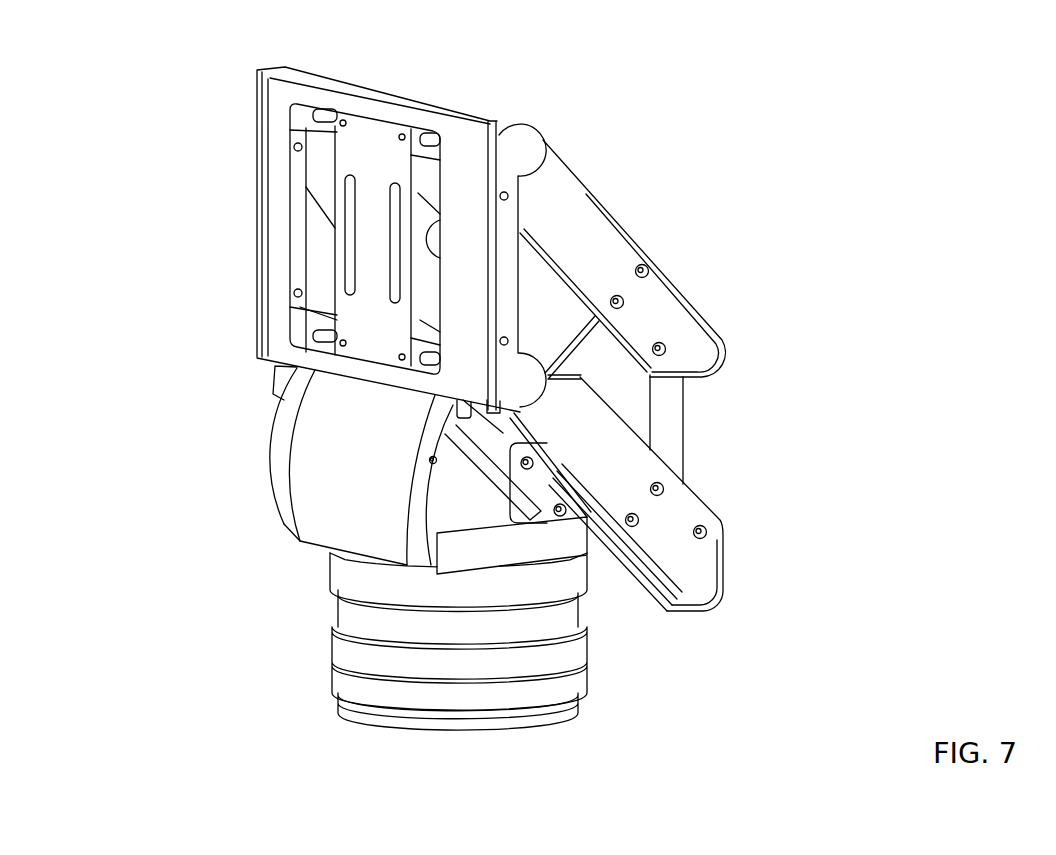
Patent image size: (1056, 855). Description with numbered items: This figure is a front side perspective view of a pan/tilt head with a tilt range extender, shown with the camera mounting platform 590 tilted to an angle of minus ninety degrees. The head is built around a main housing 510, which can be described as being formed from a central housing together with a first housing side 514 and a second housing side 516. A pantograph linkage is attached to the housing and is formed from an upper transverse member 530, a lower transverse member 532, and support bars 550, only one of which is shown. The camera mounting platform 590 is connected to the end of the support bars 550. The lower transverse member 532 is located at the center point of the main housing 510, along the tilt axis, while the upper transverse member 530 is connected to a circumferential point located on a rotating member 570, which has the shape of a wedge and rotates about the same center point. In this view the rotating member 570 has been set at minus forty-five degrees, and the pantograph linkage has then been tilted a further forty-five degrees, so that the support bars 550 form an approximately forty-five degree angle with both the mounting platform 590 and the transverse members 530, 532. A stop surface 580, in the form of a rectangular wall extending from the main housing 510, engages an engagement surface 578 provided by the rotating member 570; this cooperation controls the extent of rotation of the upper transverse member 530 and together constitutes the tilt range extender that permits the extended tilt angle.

The main housing 510 is at (374, 427).
The first housing side 514 is at (417, 462).
The second housing side 516 is at (273, 455).
The upper transverse member 530 is at (610, 383).
The lower transverse member 532 is at (668, 432).
The support bar 550 is at (577, 228).
The rotating member 570 is at (463, 473).
The engagement surface 578 is at (465, 530).
The stop surface 580 is at (493, 530).
The camera mounting platform 590 is at (278, 328).